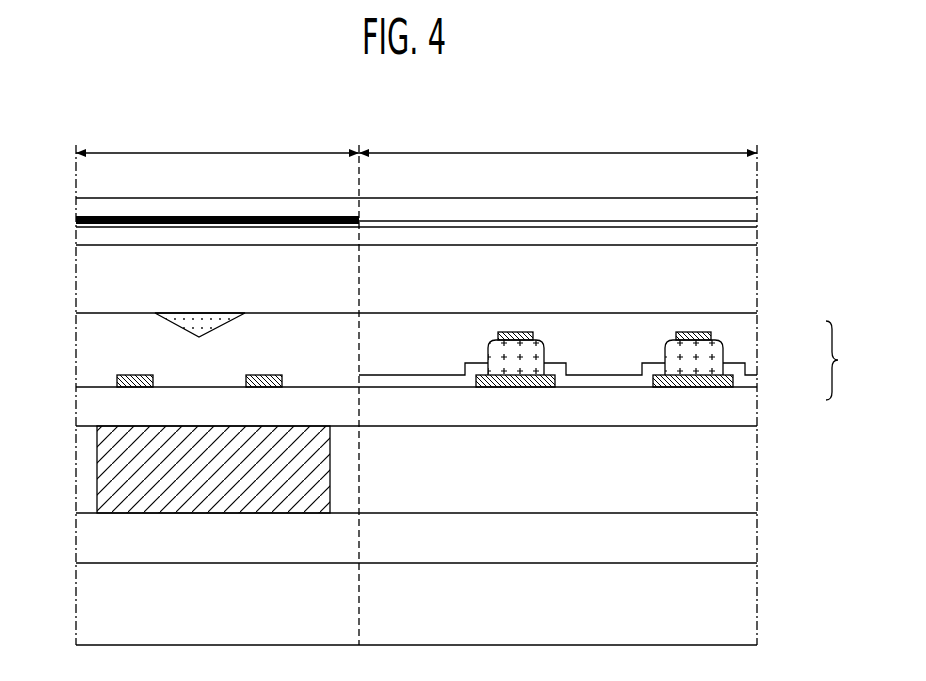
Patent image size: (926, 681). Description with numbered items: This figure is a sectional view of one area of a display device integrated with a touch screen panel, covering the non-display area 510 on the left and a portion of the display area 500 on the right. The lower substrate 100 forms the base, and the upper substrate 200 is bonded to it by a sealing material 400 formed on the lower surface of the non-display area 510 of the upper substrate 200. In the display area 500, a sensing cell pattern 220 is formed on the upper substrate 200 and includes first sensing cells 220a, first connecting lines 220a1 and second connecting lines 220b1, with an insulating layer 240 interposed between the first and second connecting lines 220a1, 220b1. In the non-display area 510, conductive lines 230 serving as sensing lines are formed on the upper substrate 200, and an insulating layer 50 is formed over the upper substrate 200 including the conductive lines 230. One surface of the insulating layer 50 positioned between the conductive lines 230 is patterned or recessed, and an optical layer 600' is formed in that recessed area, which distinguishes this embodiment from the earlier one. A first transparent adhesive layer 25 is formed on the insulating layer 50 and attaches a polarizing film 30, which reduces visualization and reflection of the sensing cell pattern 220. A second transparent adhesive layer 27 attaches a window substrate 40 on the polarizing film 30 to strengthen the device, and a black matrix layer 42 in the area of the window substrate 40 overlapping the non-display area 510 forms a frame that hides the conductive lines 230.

The window substrate 40 is at (82, 206).
The black matrix layer 42 is at (78, 221).
The second transparent adhesive layer 27 is at (86, 228).
The polarizing film 30 is at (80, 246).
The first transparent adhesive layer 25 is at (88, 291).
The optical layer 600' is at (131, 324).
The insulating layer 50 is at (86, 351).
The conductive lines 230 is at (117, 378).
The upper substrate 200 is at (82, 408).
The sealing material 400 is at (106, 474).
The non-display area 510 is at (217, 139).
The display area 500 is at (558, 139).
The insulating layer 240 is at (690, 350).
The second connecting lines 220b1 is at (703, 333).
The first sensing cells 220a is at (739, 371).
The first connecting lines 220a1 is at (733, 381).
The sensing cell pattern 220 is at (848, 360).
The lower substrate 100 is at (748, 603).